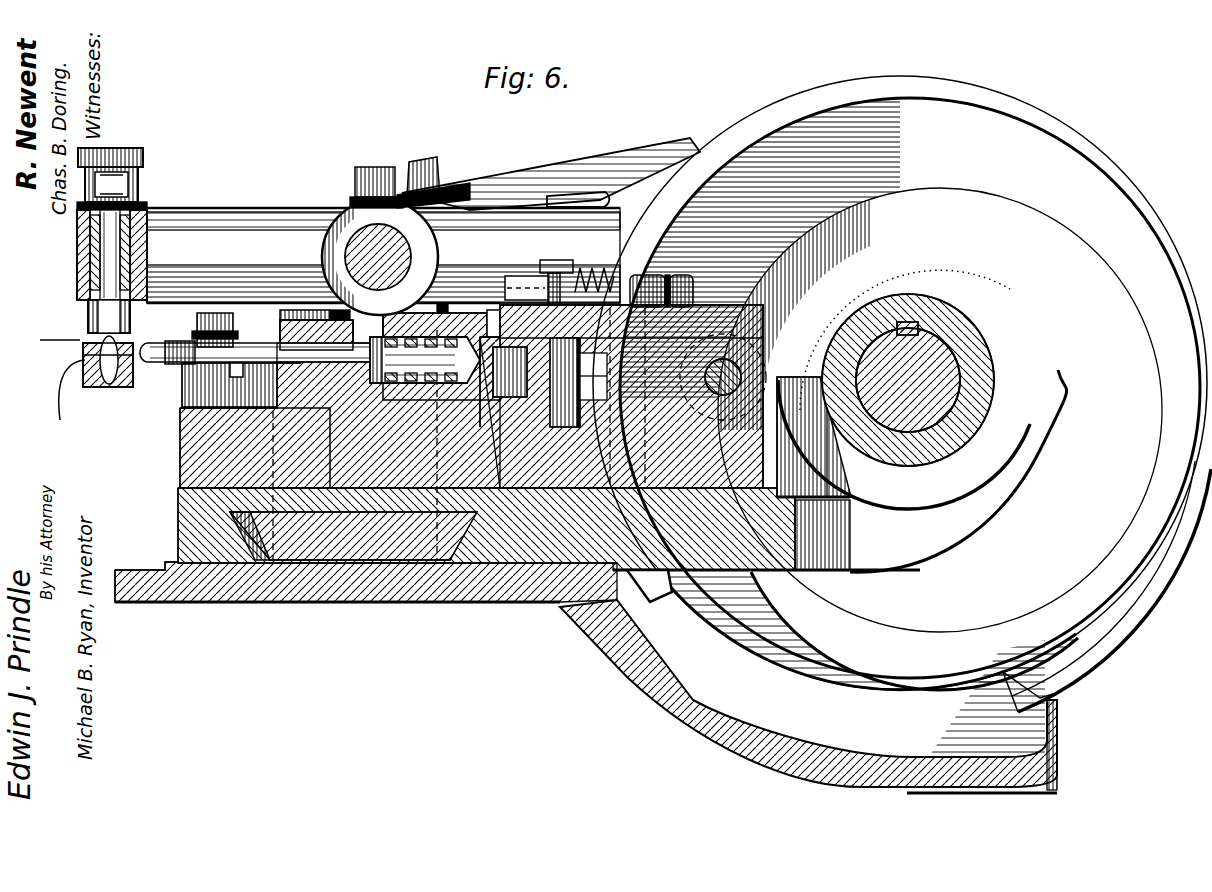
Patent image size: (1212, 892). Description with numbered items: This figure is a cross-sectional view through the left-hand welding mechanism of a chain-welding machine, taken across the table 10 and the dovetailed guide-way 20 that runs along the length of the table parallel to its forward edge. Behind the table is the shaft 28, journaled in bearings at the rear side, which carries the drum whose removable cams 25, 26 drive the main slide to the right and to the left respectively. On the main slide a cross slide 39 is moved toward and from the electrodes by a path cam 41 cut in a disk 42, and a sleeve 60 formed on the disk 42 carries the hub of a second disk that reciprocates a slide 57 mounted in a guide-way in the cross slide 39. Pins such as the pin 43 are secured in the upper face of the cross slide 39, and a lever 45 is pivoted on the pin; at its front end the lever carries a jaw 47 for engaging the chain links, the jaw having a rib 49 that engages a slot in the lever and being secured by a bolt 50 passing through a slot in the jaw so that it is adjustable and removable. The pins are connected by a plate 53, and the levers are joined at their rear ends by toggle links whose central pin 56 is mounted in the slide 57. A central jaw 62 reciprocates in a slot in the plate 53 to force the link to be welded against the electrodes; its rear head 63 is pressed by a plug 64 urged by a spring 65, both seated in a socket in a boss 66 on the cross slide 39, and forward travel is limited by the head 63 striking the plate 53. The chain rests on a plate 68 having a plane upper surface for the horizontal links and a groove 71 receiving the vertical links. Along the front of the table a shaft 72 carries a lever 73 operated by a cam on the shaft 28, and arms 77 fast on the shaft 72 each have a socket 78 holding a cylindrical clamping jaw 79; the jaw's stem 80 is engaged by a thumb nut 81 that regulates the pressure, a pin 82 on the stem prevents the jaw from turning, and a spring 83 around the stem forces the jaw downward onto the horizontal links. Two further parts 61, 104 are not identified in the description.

The table 10 is at (172, 593).
The dovetailed guide-way 20 is at (410, 545).
The cam 25 is at (672, 604).
The cam 26 is at (1128, 640).
The shaft 28 is at (950, 372).
The cross slide 39 is at (180, 463).
The path cam 41 is at (1115, 200).
The disk 42 is at (1027, 105).
The pin 43 is at (283, 312).
The lever 45 is at (193, 397).
The jaw 47 is at (148, 343).
The rib 49 is at (230, 371).
The bolt 50 is at (198, 318).
The plate 53 is at (260, 340).
The central pin 56 is at (550, 351).
The slide 57 is at (707, 335).
The sleeve 60 is at (966, 330).
The cam scroll 61 is at (915, 500).
The central jaw 62 is at (172, 341).
The head 63 is at (385, 328).
The plug 64 is at (425, 340).
The spring 65 is at (450, 340).
The boss 66 is at (490, 305).
The plate 68 is at (100, 387).
The groove 71 is at (118, 387).
The shaft 72 is at (357, 245).
The lever 73 is at (542, 172).
The arm 77 is at (258, 212).
The socket 78 is at (78, 263).
The cylindrical clamping jaw 79 is at (88, 315).
The stem 80 is at (108, 233).
The thumb nut 81 is at (128, 148).
The pin 82 is at (138, 187).
The spring 83 is at (150, 214).
The bolt with spring 104 is at (578, 260).